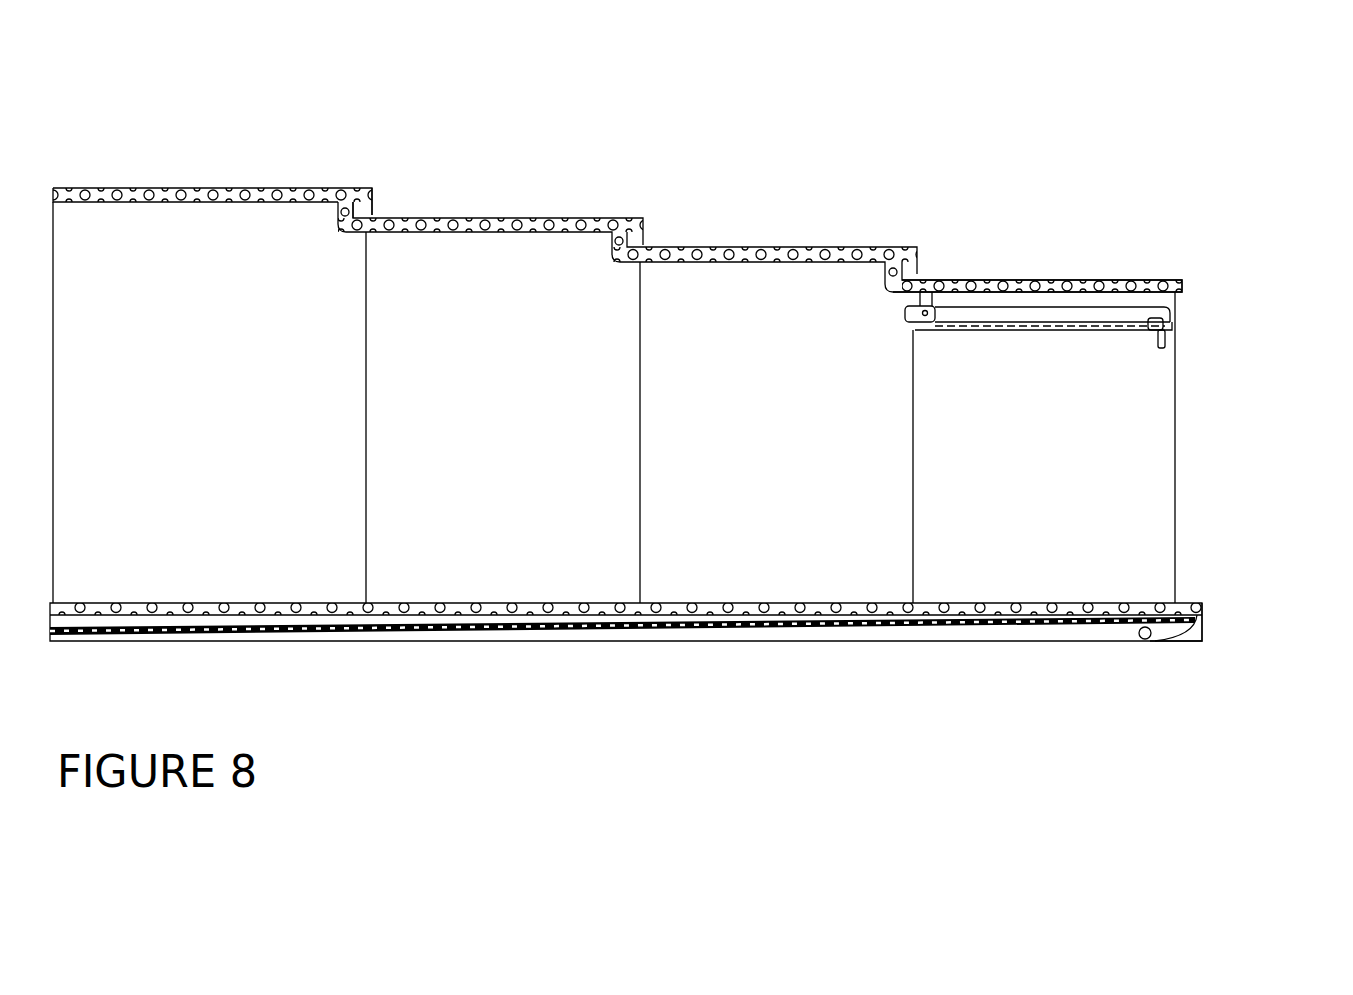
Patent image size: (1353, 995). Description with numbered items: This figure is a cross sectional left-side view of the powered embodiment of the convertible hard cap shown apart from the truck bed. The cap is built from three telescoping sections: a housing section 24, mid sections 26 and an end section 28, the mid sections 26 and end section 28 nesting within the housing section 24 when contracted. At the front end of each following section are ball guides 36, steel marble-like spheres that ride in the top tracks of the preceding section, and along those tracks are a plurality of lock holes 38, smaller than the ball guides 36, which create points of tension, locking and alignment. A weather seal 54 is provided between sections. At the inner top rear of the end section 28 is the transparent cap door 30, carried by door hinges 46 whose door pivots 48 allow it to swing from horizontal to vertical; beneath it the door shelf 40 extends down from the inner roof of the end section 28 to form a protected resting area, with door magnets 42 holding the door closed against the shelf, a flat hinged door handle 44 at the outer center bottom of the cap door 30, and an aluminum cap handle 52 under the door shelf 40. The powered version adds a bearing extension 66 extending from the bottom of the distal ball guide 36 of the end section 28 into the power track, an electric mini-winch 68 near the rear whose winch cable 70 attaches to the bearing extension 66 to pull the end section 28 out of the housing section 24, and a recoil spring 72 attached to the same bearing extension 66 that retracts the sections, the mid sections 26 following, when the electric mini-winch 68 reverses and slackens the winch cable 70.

The housing section 24 is at (97, 540).
The mid sections 26 is at (535, 573).
The end section 28 is at (937, 575).
The cap door 30 is at (1055, 322).
The ball guide 36 is at (352, 205).
The lock hole 38 is at (165, 198).
The door shelf 40 is at (997, 338).
The door magnet 42 is at (1160, 327).
The door handle 44 is at (1137, 308).
The door hinge 46 is at (928, 307).
The door pivot 48 is at (933, 313).
The cap handle 52 is at (1167, 352).
The weather seal 54 is at (368, 212).
The bearing extension 66 is at (1192, 618).
The electric mini-winch 68 is at (1142, 640).
The winch cable 70 is at (1170, 637).
The recoil spring 72 is at (352, 628).